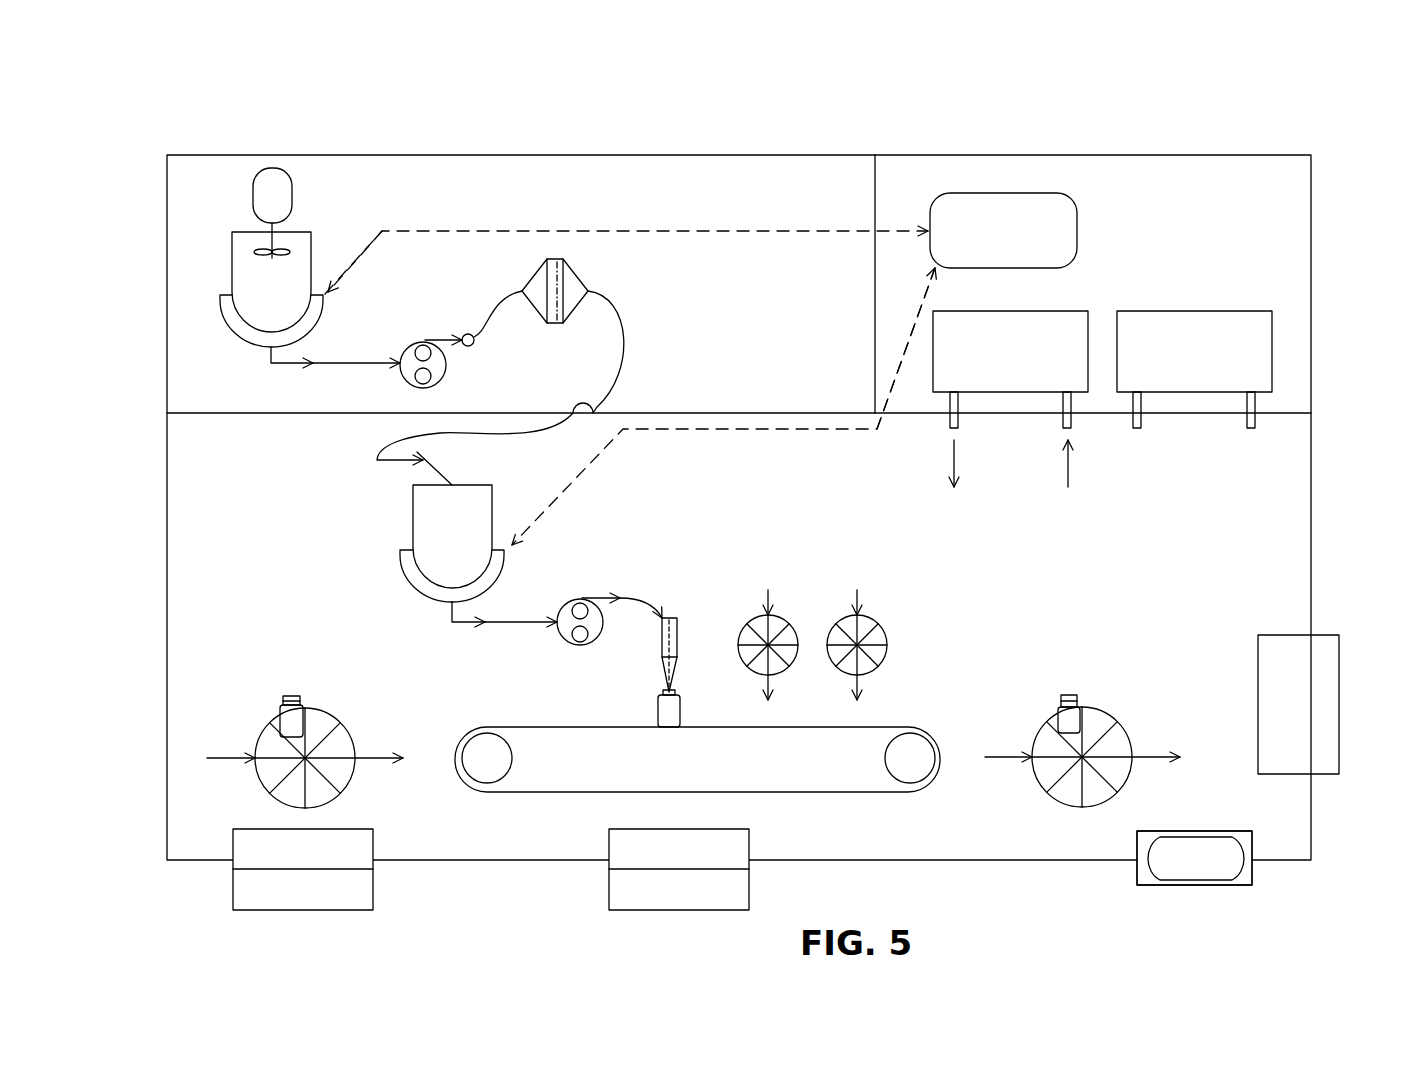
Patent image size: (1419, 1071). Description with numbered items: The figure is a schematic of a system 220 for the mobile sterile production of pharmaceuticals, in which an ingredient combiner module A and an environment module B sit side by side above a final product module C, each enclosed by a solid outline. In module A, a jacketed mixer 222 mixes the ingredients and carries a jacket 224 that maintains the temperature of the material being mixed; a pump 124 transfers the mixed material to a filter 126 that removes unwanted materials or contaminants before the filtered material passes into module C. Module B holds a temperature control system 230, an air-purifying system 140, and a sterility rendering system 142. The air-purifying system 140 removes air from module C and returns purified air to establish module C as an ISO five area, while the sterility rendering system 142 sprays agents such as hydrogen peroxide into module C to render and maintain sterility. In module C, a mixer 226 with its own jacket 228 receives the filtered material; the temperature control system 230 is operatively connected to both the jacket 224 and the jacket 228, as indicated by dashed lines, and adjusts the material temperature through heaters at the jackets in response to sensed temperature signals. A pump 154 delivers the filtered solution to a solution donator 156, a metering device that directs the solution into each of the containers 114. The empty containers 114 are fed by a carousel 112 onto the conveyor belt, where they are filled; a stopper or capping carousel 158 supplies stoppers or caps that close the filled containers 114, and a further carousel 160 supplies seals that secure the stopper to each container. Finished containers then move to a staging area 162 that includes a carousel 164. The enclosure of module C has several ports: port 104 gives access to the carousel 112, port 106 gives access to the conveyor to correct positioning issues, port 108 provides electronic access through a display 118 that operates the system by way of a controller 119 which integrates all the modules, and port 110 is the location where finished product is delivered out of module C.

The system 220 is at (117, 176).
The jacketed mixer 222 is at (323, 224).
The jacket 224 is at (220, 315).
The pump 124 is at (428, 332).
The filter 126 is at (582, 276).
The temperature control system 230 is at (1003, 205).
The air-purifying system 140 is at (1017, 362).
The sterility rendering system 142 is at (1190, 325).
The mixer 226 is at (407, 512).
The jacket 228 is at (397, 562).
The pump 154 is at (581, 598).
The solution donator 156 is at (675, 615).
The containers 114 is at (285, 695).
The carousel 112 is at (352, 727).
The stopper or capping carousel 158 is at (792, 627).
The carousel 160 is at (880, 627).
The staging area 162 is at (1090, 705).
The carousel 164 is at (1128, 732).
The port 110 is at (1328, 632).
The port 104 is at (233, 893).
The port 106 is at (605, 893).
The port 108 is at (1160, 885).
The display 118 is at (1198, 860).
The controller 119 is at (1250, 870).